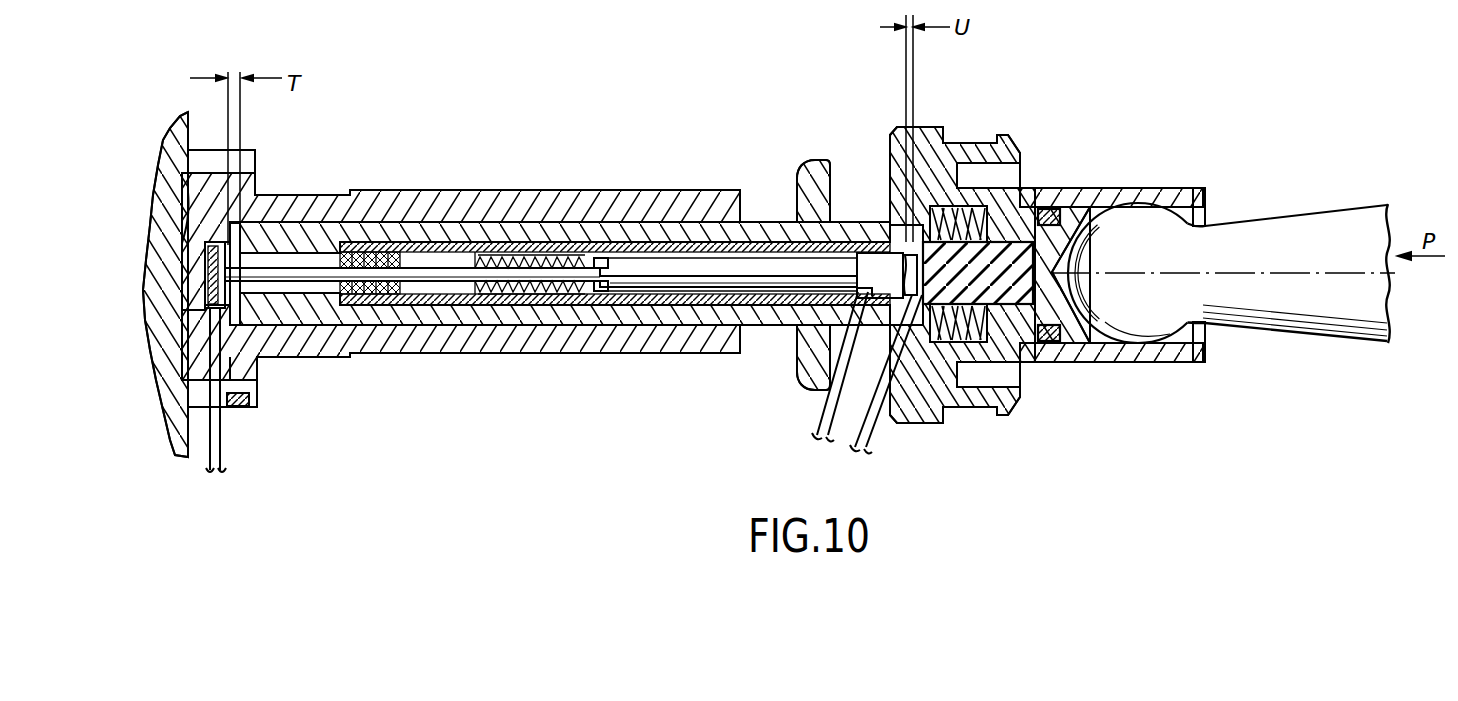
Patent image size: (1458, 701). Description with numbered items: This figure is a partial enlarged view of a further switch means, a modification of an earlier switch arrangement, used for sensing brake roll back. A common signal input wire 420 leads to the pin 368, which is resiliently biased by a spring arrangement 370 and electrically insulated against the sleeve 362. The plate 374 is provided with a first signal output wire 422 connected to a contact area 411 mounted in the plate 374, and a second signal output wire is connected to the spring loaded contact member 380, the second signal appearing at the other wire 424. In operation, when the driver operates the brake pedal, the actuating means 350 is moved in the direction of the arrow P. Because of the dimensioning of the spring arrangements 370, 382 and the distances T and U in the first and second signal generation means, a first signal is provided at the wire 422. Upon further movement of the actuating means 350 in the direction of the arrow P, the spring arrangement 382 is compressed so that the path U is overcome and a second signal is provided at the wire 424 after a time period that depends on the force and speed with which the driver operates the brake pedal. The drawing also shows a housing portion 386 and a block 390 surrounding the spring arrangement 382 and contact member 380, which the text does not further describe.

The actuating means 350 is at (1300, 267).
The sleeve 362 is at (585, 322).
The pin 368 is at (698, 273).
The spring arrangement 370 is at (590, 257).
The plate 374 is at (192, 192).
The spring loaded contact member 380 is at (1027, 310).
The spring arrangement 382 is at (978, 212).
The socket housing 386 is at (1077, 338).
The coupling block 390 is at (935, 127).
The contact area 411 is at (206, 268).
The common signal input wire 420 is at (818, 417).
The first signal output wire 422 is at (222, 452).
The second signal output wire 424 is at (866, 440).